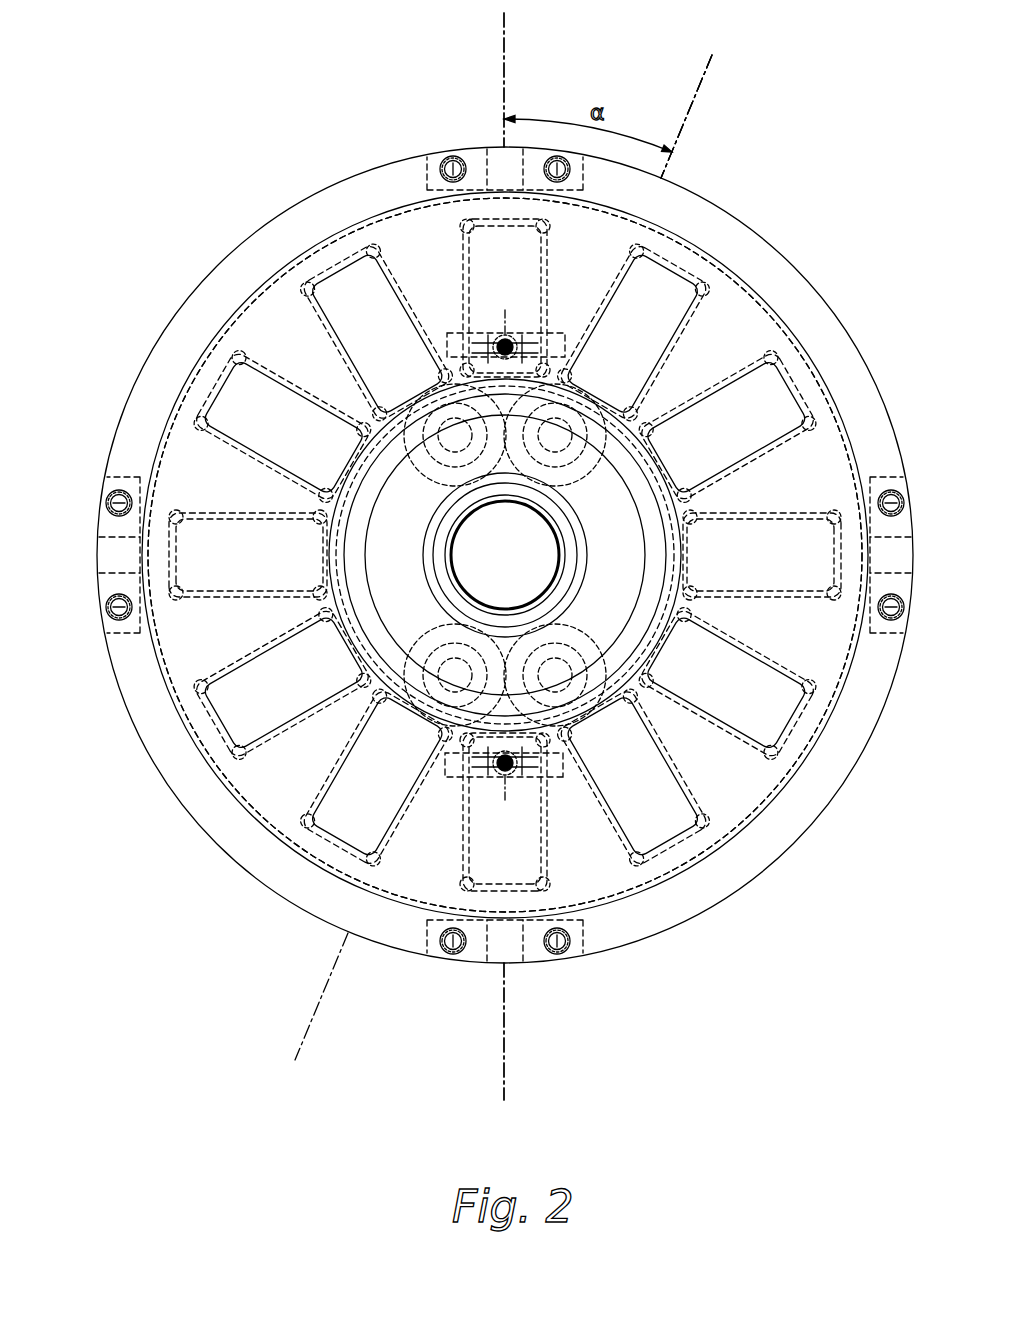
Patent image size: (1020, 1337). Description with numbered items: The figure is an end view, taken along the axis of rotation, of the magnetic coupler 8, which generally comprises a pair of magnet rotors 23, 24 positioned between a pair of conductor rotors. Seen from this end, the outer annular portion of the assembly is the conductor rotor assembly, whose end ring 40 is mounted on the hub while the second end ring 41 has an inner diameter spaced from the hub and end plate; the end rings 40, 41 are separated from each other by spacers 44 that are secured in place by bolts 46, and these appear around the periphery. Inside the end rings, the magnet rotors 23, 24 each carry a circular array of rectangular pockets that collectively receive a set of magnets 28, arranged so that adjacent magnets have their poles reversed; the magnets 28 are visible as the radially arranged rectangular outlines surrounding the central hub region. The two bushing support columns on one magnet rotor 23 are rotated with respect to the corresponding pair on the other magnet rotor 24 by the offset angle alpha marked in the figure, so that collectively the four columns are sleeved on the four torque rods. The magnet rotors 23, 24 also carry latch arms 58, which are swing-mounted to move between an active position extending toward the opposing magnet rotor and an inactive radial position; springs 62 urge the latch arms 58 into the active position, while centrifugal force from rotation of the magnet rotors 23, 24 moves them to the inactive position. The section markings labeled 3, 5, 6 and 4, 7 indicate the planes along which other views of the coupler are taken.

The magnetic coupler 8 is at (268, 140).
The end ring 40 is at (228, 252).
The second end ring 41 is at (228, 252).
The magnet rotor 23 is at (183, 380).
The magnet rotor 24 is at (183, 380).
The magnets 28 is at (200, 418).
The spacers 44 is at (97, 553).
The bolts 46 is at (112, 612).
The latch arms 58 is at (500, 798).
The springs 62 is at (507, 770).
The section line 3 is at (334, 981).
The section line 4 is at (506, 1075).
The section line 5 is at (743, 116).
The section line 6 is at (743, 116).
The section line 7 is at (552, 556).